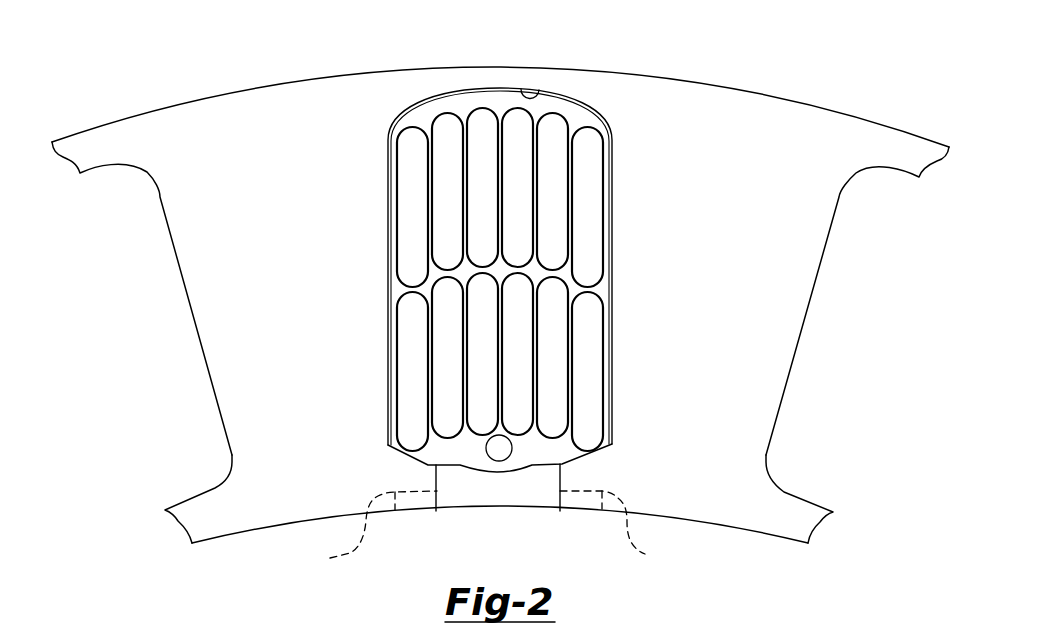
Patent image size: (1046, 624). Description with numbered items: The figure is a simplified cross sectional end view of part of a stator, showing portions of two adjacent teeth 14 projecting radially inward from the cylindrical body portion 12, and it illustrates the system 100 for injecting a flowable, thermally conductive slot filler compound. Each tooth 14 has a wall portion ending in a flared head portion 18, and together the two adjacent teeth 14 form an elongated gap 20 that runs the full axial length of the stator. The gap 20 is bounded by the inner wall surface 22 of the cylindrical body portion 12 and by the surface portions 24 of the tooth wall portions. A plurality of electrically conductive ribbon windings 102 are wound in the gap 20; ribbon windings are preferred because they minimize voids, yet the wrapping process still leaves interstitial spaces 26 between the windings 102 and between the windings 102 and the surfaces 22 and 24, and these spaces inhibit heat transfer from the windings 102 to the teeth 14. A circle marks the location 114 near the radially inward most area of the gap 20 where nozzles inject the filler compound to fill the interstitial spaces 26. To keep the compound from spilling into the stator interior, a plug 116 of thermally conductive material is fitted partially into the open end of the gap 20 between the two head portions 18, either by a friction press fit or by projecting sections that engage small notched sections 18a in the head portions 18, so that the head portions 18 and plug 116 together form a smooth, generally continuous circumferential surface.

The cylindrical body portion 12 is at (442, 77).
The teeth 14 is at (247, 370).
The head portion 18 is at (252, 508).
The notched sections 18a is at (346, 557).
The gap 20 is at (578, 454).
The inner wall surface 22 is at (540, 99).
The surface portions 24 is at (388, 213).
The interstitial spaces 26 is at (421, 120).
The system 100 is at (280, 222).
The ribbon windings 102 is at (592, 325).
The location 114 is at (497, 451).
The plug 116 is at (460, 495).